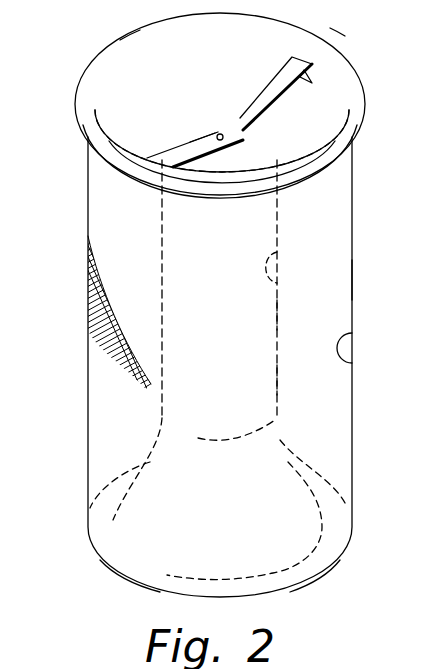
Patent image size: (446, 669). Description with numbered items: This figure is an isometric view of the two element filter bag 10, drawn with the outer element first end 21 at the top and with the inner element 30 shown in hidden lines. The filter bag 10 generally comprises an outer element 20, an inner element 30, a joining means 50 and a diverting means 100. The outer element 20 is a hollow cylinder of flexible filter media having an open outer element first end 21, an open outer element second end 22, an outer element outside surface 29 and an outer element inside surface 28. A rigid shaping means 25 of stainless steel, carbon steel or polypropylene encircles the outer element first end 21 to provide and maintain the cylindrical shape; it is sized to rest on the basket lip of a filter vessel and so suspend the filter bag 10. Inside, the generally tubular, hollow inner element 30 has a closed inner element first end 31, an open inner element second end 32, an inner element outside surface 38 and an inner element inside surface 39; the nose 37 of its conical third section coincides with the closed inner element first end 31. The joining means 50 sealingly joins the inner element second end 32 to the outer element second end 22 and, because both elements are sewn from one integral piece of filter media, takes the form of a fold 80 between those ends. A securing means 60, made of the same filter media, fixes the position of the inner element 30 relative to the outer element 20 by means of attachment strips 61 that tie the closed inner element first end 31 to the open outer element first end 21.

The filter bag 10 is at (350, 31).
The outer element 20 is at (353, 197).
The outer element first end 21 is at (363, 87).
The outer element second end 22 is at (327, 563).
The shaping means 25 is at (357, 63).
The outer element inside surface 28 is at (352, 325).
The outer element outside surface 29 is at (352, 281).
The inner element 30 is at (280, 315).
The inner element first end 31 is at (248, 157).
The inner element second end 32 is at (283, 443).
The nose 37 is at (218, 134).
The inner element outside surface 38 is at (280, 380).
The inner element inside surface 39 is at (283, 250).
The joining means 50 is at (132, 580).
The securing means 60 is at (97, 36).
The attachment strips 61 is at (258, 88).
The fold 80 is at (277, 582).
The diverting means 100 is at (250, 157).